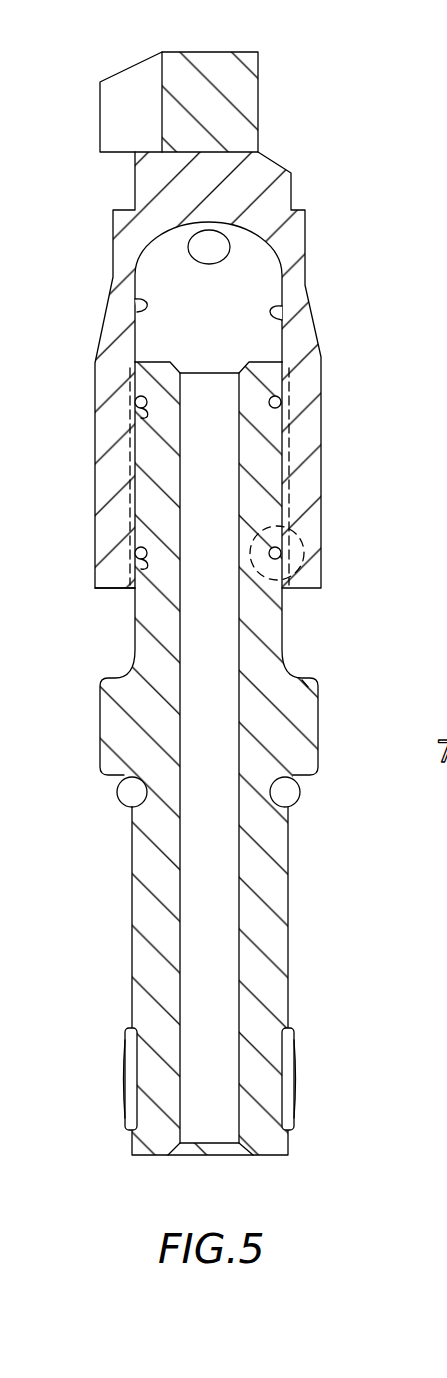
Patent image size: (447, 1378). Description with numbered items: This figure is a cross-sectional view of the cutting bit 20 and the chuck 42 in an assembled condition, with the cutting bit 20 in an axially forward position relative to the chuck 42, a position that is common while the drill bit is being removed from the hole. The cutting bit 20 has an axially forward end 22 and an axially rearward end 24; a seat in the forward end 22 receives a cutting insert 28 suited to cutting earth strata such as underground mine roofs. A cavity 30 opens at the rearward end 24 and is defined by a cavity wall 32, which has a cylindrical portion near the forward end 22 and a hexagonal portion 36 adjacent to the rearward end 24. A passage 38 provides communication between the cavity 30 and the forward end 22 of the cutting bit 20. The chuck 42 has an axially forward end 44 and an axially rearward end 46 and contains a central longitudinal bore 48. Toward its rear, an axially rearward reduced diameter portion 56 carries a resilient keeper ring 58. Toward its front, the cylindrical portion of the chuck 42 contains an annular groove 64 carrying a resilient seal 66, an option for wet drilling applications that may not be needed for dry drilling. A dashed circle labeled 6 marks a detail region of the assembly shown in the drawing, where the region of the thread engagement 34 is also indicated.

The cutting bit 20 is at (358, 155).
The axially forward end 22 is at (262, 135).
The axially rearward end 24 is at (110, 588).
The cutting insert 28 is at (130, 80).
The cavity 30 is at (152, 273).
The cavity wall 32 is at (137, 310).
The right thread engagement 34 is at (272, 313).
The hexagonal portion 36 is at (278, 466).
The passage 38 is at (215, 243).
The chuck 42 is at (113, 945).
The axially forward end 44 is at (262, 362).
The axially rearward end 46 is at (270, 1155).
The central longitudinal bore 48 is at (222, 963).
The axially rearward reduced diameter portion 56 is at (280, 1097).
The resilient keeper ring 58 is at (294, 1057).
The annular groove 64 is at (145, 420).
The resilient seal 66 is at (140, 402).
The detail area of FIG. 6 is at (305, 540).